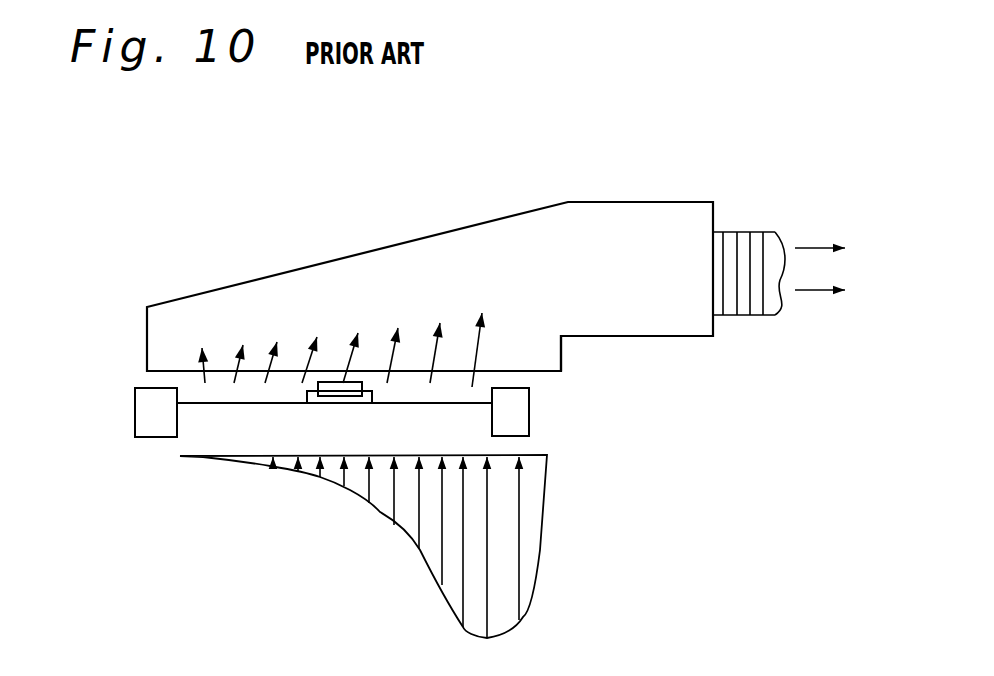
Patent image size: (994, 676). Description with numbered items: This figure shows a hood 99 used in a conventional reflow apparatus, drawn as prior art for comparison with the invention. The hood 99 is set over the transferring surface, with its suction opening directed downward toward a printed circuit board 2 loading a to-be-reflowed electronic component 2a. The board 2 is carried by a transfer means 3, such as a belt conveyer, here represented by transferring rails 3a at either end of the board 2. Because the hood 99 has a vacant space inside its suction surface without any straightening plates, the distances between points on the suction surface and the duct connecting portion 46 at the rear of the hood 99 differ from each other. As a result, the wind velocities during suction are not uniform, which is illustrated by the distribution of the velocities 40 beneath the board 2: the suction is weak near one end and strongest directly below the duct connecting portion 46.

The hood 99 is at (384, 226).
The duct connecting portion 46 is at (660, 337).
The transfer means 3 is at (320, 468).
The transferring rail 3a is at (157, 410).
The printed circuit board 2 is at (222, 420).
The electronic component 2a is at (336, 392).
The distribution of the velocities 40 is at (541, 548).